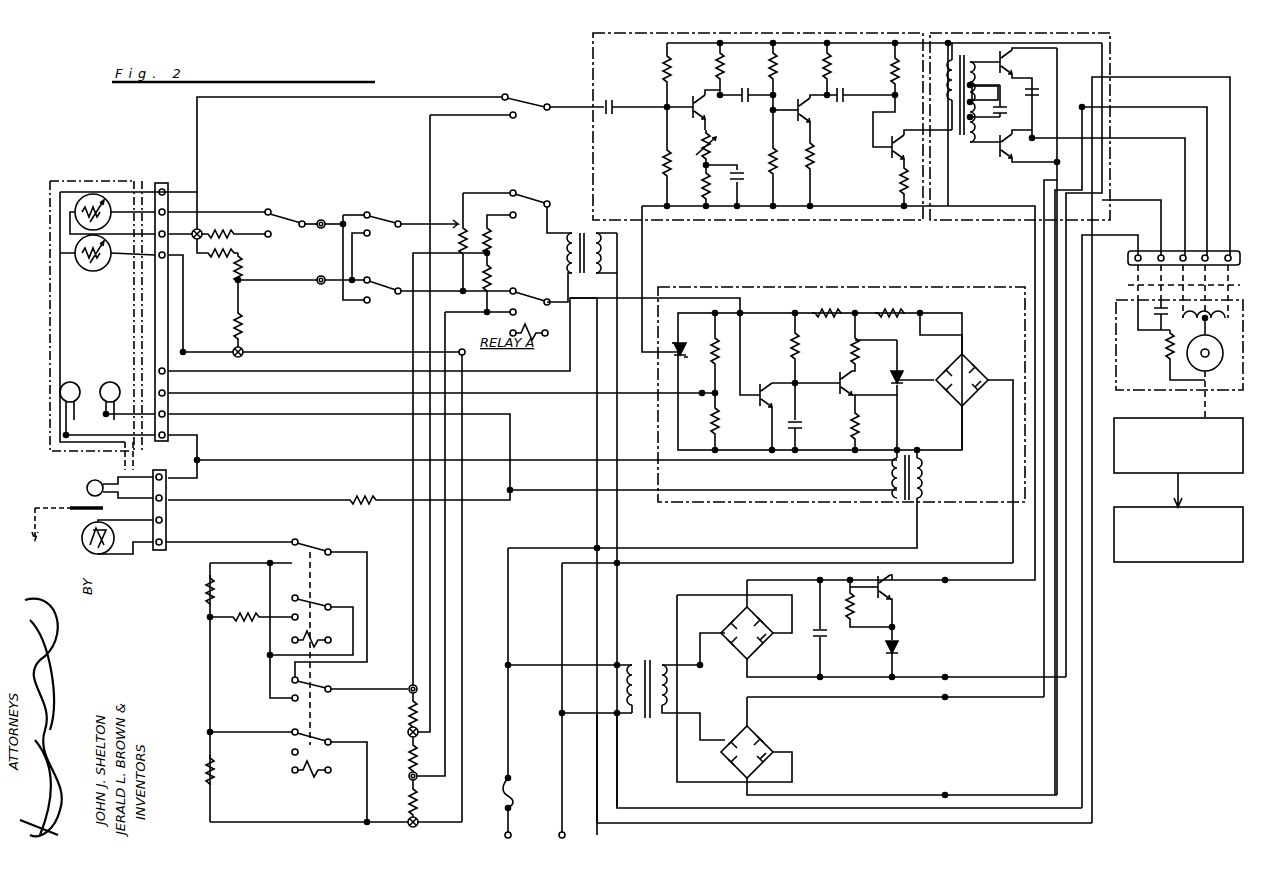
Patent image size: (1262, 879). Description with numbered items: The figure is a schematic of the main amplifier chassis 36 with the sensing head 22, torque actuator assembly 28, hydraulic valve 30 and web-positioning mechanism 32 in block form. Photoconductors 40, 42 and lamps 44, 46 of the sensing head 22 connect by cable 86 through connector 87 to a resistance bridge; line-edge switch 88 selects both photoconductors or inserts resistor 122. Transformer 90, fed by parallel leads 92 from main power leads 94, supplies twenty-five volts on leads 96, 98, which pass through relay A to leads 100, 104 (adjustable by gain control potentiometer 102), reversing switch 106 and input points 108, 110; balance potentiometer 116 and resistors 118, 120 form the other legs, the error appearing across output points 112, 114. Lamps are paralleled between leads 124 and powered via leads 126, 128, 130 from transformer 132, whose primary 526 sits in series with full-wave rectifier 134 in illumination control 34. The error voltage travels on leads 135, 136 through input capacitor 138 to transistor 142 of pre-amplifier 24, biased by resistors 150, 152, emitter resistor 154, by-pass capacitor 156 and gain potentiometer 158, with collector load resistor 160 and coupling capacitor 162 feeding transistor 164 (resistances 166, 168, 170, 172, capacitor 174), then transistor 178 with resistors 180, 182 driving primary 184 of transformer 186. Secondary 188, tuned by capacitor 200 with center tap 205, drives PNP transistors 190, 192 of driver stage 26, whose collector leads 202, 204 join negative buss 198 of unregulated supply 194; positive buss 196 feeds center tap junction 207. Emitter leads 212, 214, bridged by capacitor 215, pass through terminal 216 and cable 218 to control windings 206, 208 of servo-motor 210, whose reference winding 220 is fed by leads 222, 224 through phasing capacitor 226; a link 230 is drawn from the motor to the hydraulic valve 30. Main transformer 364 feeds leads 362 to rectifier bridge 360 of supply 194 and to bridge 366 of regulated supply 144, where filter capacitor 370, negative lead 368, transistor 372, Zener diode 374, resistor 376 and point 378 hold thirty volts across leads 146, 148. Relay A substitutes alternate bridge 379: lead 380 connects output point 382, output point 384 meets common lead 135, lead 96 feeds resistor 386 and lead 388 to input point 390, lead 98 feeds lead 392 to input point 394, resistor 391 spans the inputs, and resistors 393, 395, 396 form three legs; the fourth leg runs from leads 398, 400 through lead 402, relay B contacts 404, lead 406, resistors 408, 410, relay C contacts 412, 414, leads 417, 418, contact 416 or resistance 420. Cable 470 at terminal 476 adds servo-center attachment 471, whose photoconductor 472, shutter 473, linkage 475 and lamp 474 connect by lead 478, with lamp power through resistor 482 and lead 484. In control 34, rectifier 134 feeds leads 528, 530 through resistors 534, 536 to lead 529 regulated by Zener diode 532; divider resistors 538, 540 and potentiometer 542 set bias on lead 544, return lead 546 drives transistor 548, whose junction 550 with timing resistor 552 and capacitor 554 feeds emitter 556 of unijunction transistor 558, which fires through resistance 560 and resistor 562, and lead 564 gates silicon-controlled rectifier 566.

The sensing head 22 is at (58, 180).
The pre-amplifier 24 is at (593, 36).
The driver stage 26 is at (952, 226).
The torque actuator assembly 28 is at (1140, 390).
The hydraulic valve 30 is at (1176, 418).
The web-positioning mechanism 32 is at (1148, 505).
The illumination control unit 34 is at (858, 288).
The main amplifier chassis 36 is at (493, 64).
The photoconductor 40 is at (90, 268).
The photoconductor 42 is at (75, 209).
The illuminating lamp 44 is at (76, 370).
The illuminating lamp 46 is at (116, 370).
The cable 86 is at (134, 181).
The connector 87 is at (163, 183).
The line-edge switch 88 is at (304, 222).
The transformer 90 is at (594, 224).
The parallel leads 92 is at (606, 530).
The main power leads 94 is at (512, 588).
The secondary lead 96 is at (552, 220).
The secondary lead 98 is at (546, 280).
The lead 100 is at (428, 290).
The gain control potentiometer 102 is at (460, 222).
The lead 104 is at (448, 226).
The reversing switch 106 is at (372, 216).
The A-C input point 108 is at (343, 218).
The A-C input point 110 is at (320, 284).
The output point 112 is at (197, 228).
The output point 114 is at (233, 350).
The balance control potentiometer 116 is at (250, 277).
The resistor 118 is at (233, 258).
The resistor 120 is at (242, 320).
The resistor 122 is at (222, 232).
The leads 124 is at (125, 448).
The lead 126 is at (294, 458).
The lead 128 is at (262, 420).
The lead 130 is at (698, 492).
The transformer 132 is at (918, 490).
The full-wave rectifier 134 is at (984, 362).
The common lead 135 is at (290, 352).
The lead 136 is at (314, 97).
The input capacitor 138 is at (606, 116).
The transistor 142 is at (702, 108).
The power supply 144 is at (958, 681).
The voltage supply lead 146 is at (710, 46).
The voltage supply lead 148 is at (870, 210).
The resistor 150 is at (664, 66).
The resistor 152 is at (662, 150).
The resistor 154 is at (700, 180).
The by-pass capacitor 156 is at (746, 160).
The potentiometer 158 is at (700, 148).
The collector load resistor 160 is at (724, 52).
The coupling capacitor 162 is at (760, 88).
The transistor 164 is at (808, 118).
The resistance 166 is at (776, 52).
The resistance 168 is at (780, 165).
The resistance 170 is at (804, 165).
The collector resistance 172 is at (832, 52).
The coupling capacitor 174 is at (834, 94).
The transistor 178 is at (888, 152).
The resistor 180 is at (890, 72).
The resistor 182 is at (902, 188).
The primary 184 is at (948, 130).
The transformer 186 is at (950, 64).
The secondary 188 is at (972, 132).
The transistor 190 is at (1014, 62).
The transistor 192 is at (1014, 145).
The power supply 194 is at (890, 744).
The lead 196 is at (585, 108).
The lead 198 is at (1044, 243).
The capacitor 200 is at (1018, 122).
The collector lead 202 is at (1040, 162).
The collector lead 204 is at (1058, 50).
The center tap 205 is at (986, 92).
The control winding 206 is at (1204, 328).
The center tap junction 207 is at (1176, 352).
The control winding 208 is at (1176, 338).
The servo-motor 210 is at (1200, 372).
The emitter lead 212 is at (1040, 90).
The emitter lead 214 is at (1132, 138).
The capacitor 215 is at (1040, 96).
The terminal 216 is at (1178, 240).
The cable 218 is at (1134, 282).
The reference winding 220 is at (1176, 366).
The lead 222 is at (1108, 733).
The lead 224 is at (604, 706).
The phasing capacitor 226 is at (1152, 312).
The motor shaft 230 is at (1206, 400).
The full-wave rectifier bridge 360 is at (772, 740).
The leads 362 is at (690, 732).
The main transformer 364 is at (642, 662).
The full-wave rectifier bridge 366 is at (756, 660).
The negative output lead 368 is at (770, 584).
The filter capacitor 370 is at (820, 642).
The transistor 372 is at (900, 592).
The Zener diode 374 is at (900, 648).
The resistor 376 is at (858, 606).
The point 378 is at (896, 628).
The alternate resistance bridge 379 is at (206, 698).
The lead 380 is at (432, 142).
The bridge output point 382 is at (406, 731).
The bridge output point 384 is at (414, 828).
The resistor 386 is at (482, 232).
The lead 388 is at (450, 256).
The bridge input point 390 is at (408, 696).
The resistor 391 is at (482, 262).
The lead 392 is at (447, 320).
The resistor 393 is at (408, 711).
The bridge input point 394 is at (406, 774).
The resistor 395 is at (408, 748).
The resistor 396 is at (408, 792).
The lead 398 is at (374, 824).
The lead 400 is at (348, 690).
The lead 402 is at (366, 796).
The relay B contacts 404 is at (314, 740).
The lead 406 is at (210, 676).
The resistor 408 is at (252, 608).
The resistor 410 is at (214, 586).
The relay C contact 412 is at (313, 602).
The relay C contact 414 is at (312, 550).
The relay B contact 416 is at (309, 688).
The lead 417 is at (353, 633).
The lead 418 is at (270, 655).
The resistance 420 is at (214, 758).
The cable 470 is at (148, 548).
The servo-center attachment 471 is at (116, 556).
The photoconductor 472 is at (82, 526).
The shutter 473 is at (70, 494).
The lamp 474 is at (86, 482).
The linkage 475 is at (94, 552).
The terminal 476 is at (166, 535).
The lead 478 is at (234, 542).
The current limiting resistor 482 is at (356, 496).
The lead 484 is at (300, 500).
The primary 526 is at (920, 470).
The lead 528 is at (914, 342).
The D-C supply lead 529 is at (748, 312).
The lead 530 is at (720, 450).
The Zener diode 532 is at (680, 342).
The voltage dropping resistor 534 is at (814, 312).
The isolation resistance 536 is at (882, 312).
The resistor 538 is at (720, 340).
The resistor 540 is at (712, 398).
The potentiometer 542 is at (722, 380).
The center tapped lead 544 is at (284, 393).
The return lead 546 is at (284, 372).
The transistor 548 is at (768, 410).
The junction 550 is at (795, 380).
The timing resistor 552 is at (798, 342).
The capacitor 554 is at (804, 432).
The emitter 556 is at (798, 400).
The unijunction transistor 558 is at (898, 370).
The resistance 560 is at (846, 425).
The resistor 562 is at (860, 342).
The lead 564 is at (857, 400).
The silicon-controlled rectifier 566 is at (897, 375).